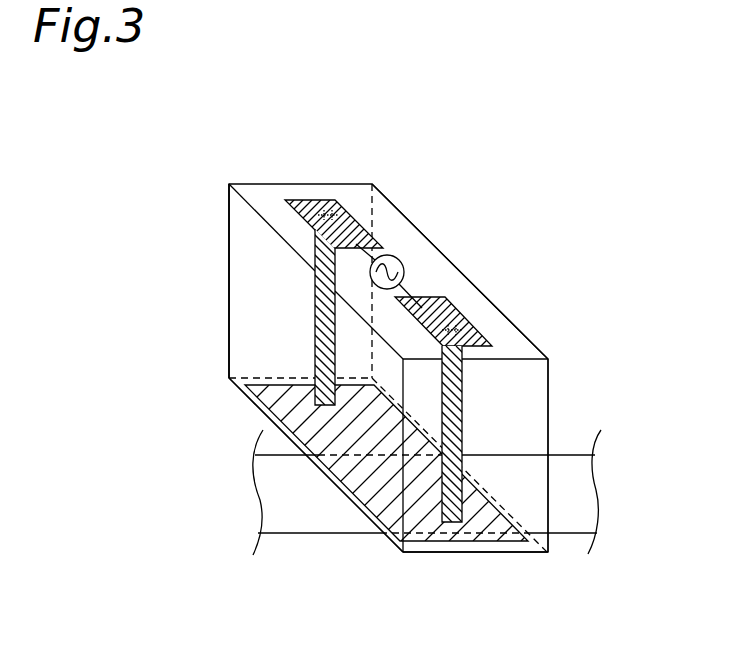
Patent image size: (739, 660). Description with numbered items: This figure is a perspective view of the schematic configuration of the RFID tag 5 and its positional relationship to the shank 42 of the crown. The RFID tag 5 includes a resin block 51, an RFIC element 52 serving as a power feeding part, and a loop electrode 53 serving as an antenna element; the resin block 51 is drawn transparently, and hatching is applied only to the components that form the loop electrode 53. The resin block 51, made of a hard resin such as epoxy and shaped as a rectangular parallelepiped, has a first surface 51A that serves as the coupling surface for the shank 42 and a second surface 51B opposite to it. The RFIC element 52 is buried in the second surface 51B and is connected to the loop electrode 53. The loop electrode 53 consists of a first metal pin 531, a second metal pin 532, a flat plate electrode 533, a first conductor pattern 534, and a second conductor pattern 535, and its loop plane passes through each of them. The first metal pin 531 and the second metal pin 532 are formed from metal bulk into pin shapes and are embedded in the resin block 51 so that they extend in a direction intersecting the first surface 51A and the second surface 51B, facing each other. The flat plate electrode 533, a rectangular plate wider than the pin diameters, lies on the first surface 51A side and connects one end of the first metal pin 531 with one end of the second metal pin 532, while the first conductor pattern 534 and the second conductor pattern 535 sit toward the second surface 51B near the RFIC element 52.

The RFID tag 5 is at (260, 194).
The shank 42 is at (567, 465).
The resin block 51 is at (248, 290).
The first surface 51A is at (474, 556).
The second surface 51B is at (505, 343).
The RFIC element 52 is at (397, 258).
The loop electrode 53 is at (288, 314).
The first metal pin 531 is at (315, 290).
The second metal pin 532 is at (457, 408).
The flat plate electrode 533 is at (388, 514).
The first conductor pattern 534 is at (341, 212).
The second conductor pattern 535 is at (452, 302).